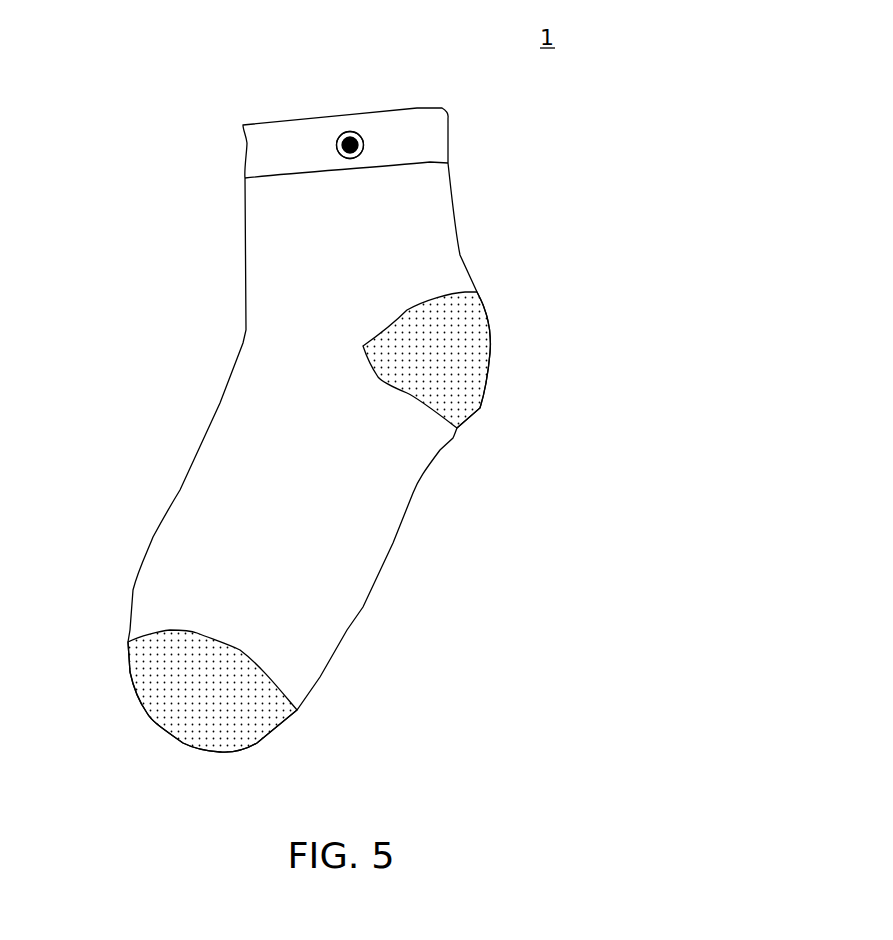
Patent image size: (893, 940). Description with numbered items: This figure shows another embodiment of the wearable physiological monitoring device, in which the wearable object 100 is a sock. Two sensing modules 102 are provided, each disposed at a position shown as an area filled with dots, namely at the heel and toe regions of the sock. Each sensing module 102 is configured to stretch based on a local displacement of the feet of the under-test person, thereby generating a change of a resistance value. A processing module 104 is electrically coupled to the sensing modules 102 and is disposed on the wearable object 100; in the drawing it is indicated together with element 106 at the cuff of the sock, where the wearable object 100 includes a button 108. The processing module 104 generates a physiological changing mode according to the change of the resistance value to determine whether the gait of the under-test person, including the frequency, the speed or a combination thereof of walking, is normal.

The wearable object 100 is at (247, 268).
The sensing module 102 is at (490, 343).
The processing module 104 is at (357, 160).
The electronic module 106 is at (394, 177).
The button 108 is at (343, 157).